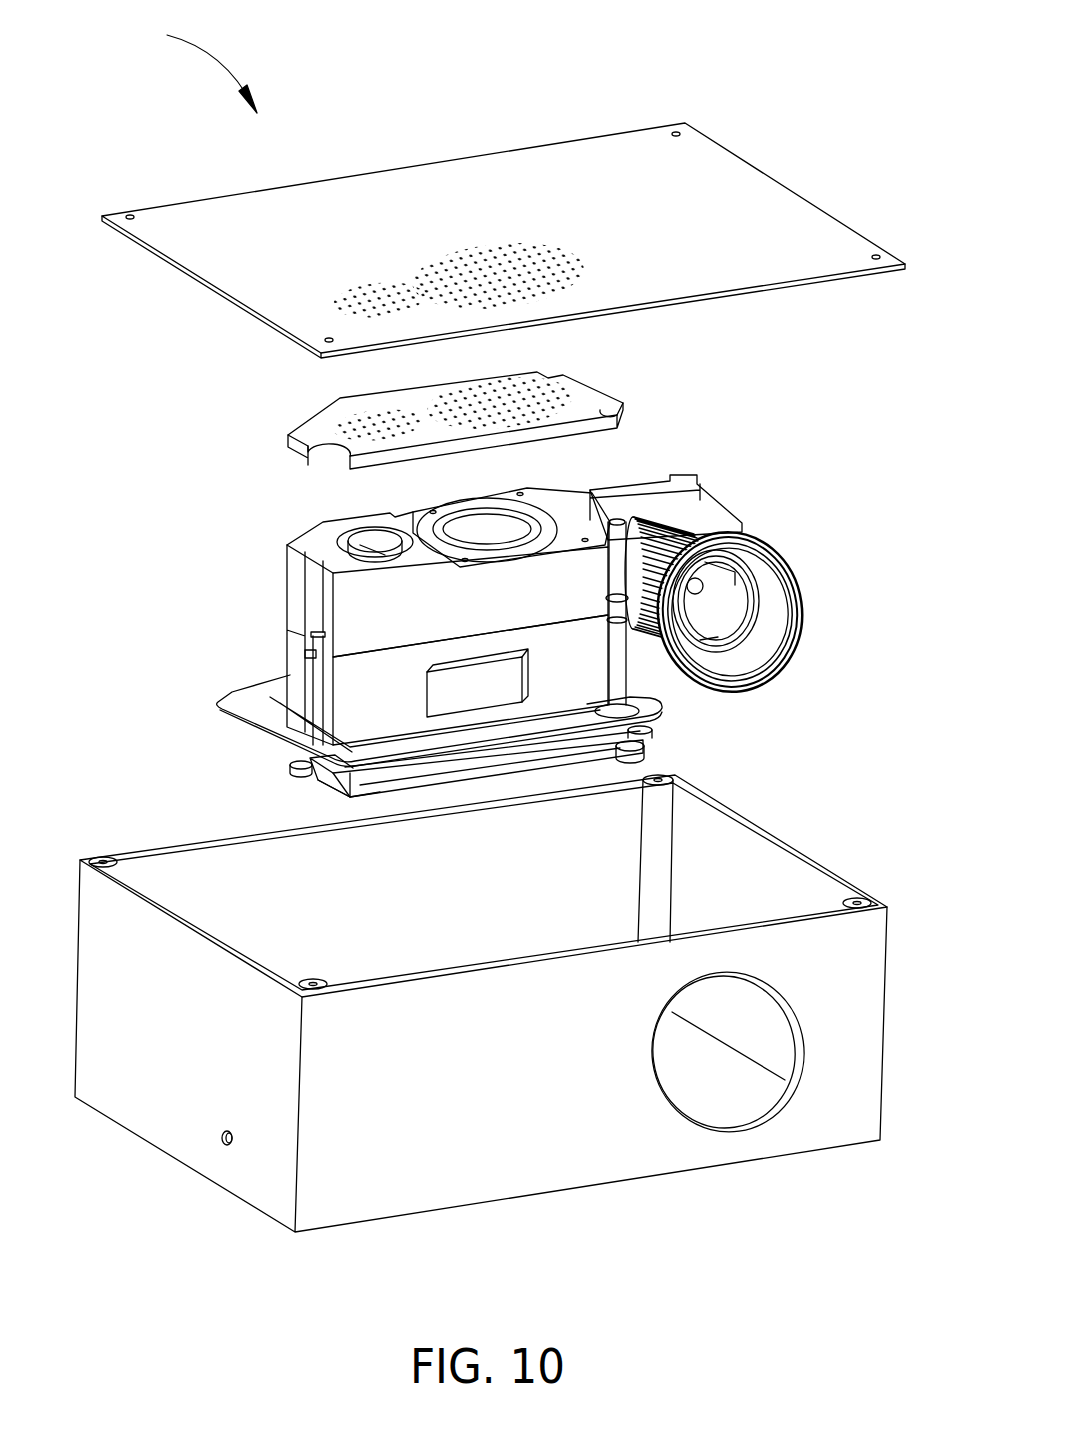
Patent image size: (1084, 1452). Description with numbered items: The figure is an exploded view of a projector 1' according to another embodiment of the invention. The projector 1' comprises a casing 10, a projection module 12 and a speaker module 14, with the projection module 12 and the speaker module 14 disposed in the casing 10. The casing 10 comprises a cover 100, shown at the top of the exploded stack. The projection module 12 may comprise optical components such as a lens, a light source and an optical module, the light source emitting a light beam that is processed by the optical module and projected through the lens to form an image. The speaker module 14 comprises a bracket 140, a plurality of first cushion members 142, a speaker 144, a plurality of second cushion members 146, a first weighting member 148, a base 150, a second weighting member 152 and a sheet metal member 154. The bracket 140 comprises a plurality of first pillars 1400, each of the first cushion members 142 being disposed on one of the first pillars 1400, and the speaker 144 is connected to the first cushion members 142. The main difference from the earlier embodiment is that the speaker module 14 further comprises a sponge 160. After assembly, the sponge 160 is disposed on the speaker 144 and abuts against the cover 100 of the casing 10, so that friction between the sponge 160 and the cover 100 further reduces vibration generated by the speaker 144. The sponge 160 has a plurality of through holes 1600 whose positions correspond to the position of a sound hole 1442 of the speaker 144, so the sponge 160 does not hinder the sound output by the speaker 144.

The projector 1' is at (188, 64).
The casing 10 is at (880, 1102).
The projection module 12 is at (733, 510).
The speaker module 14 is at (230, 605).
The cover 100 is at (777, 214).
The bracket 140 is at (338, 772).
The first cushion members 142 is at (315, 633).
The speaker 144 is at (313, 535).
The second cushion members 146 is at (645, 741).
The first weighting member 148 is at (462, 697).
The base 150 is at (352, 800).
The second weighting member 152 is at (553, 752).
The sheet metal member 154 is at (218, 706).
The sponge 160 is at (340, 408).
The first pillars 1400 is at (320, 680).
The sound hole 1442 is at (536, 522).
The through holes 1600 is at (588, 393).